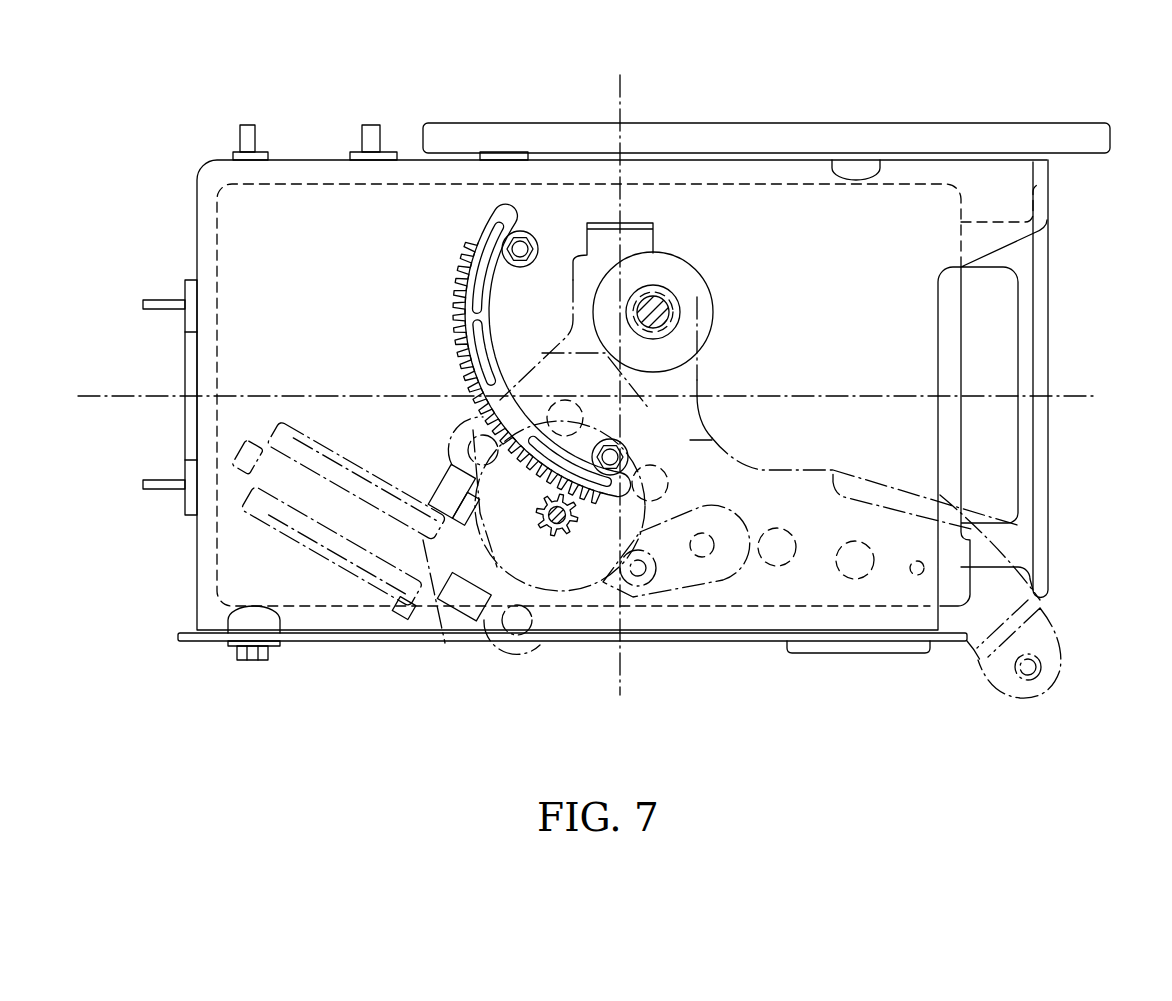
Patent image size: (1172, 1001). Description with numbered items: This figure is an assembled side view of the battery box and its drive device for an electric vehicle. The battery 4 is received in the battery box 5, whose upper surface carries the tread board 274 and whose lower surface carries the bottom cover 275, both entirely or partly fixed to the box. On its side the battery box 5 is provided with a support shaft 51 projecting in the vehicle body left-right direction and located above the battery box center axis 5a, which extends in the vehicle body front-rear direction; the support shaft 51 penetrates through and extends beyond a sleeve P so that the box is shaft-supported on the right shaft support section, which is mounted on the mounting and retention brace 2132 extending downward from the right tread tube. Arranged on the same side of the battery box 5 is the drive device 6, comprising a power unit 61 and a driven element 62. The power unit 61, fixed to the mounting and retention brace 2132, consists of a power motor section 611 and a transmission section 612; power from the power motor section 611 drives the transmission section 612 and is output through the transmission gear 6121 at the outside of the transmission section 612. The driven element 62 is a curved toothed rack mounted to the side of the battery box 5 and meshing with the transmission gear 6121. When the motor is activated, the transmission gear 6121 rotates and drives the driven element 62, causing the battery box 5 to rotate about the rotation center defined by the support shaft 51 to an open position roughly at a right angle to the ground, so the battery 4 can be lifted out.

The battery 4 is at (1045, 477).
The battery box 5 is at (196, 216).
The battery box center axis 5a is at (92, 400).
The drive device 6 is at (342, 570).
The support shaft 51 is at (673, 313).
The power unit 61 is at (648, 591).
The driven element 62 is at (447, 297).
The power motor section 611 is at (423, 540).
The transmission section 612 is at (527, 560).
The transmission gear 6121 is at (560, 535).
The tread board 274 is at (773, 140).
The bottom cover 275 is at (202, 638).
The mounting and retention brace 2132 is at (1057, 665).
The sleeve P is at (673, 300).